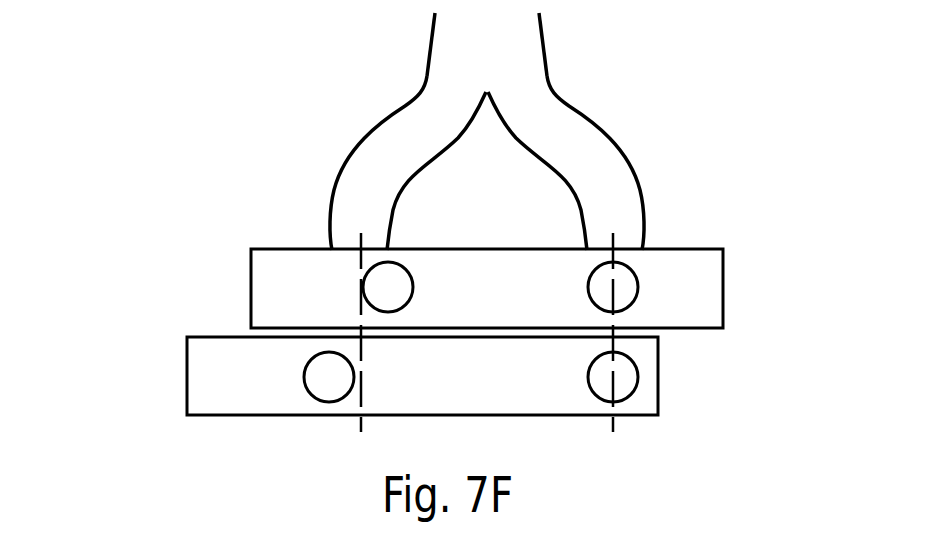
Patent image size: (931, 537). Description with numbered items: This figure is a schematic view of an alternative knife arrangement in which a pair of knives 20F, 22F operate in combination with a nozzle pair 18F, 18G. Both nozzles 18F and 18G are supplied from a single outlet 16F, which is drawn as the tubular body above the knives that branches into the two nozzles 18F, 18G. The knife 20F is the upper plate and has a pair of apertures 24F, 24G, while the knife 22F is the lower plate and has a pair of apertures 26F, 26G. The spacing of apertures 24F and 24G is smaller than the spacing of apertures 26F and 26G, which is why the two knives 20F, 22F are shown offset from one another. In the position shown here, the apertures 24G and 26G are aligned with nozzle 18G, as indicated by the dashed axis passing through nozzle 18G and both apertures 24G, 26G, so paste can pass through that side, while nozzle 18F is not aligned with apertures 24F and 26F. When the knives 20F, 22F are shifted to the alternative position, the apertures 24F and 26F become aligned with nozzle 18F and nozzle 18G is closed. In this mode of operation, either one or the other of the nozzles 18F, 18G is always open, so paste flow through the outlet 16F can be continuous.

The outlet 16F is at (552, 83).
The nozzle 18F is at (332, 198).
The nozzle 18G is at (643, 208).
The knife 20F is at (250, 288).
The knife 22F is at (187, 374).
The aperture 24F is at (364, 283).
The aperture 24G is at (633, 272).
The aperture 26F is at (317, 398).
The aperture 26G is at (637, 375).